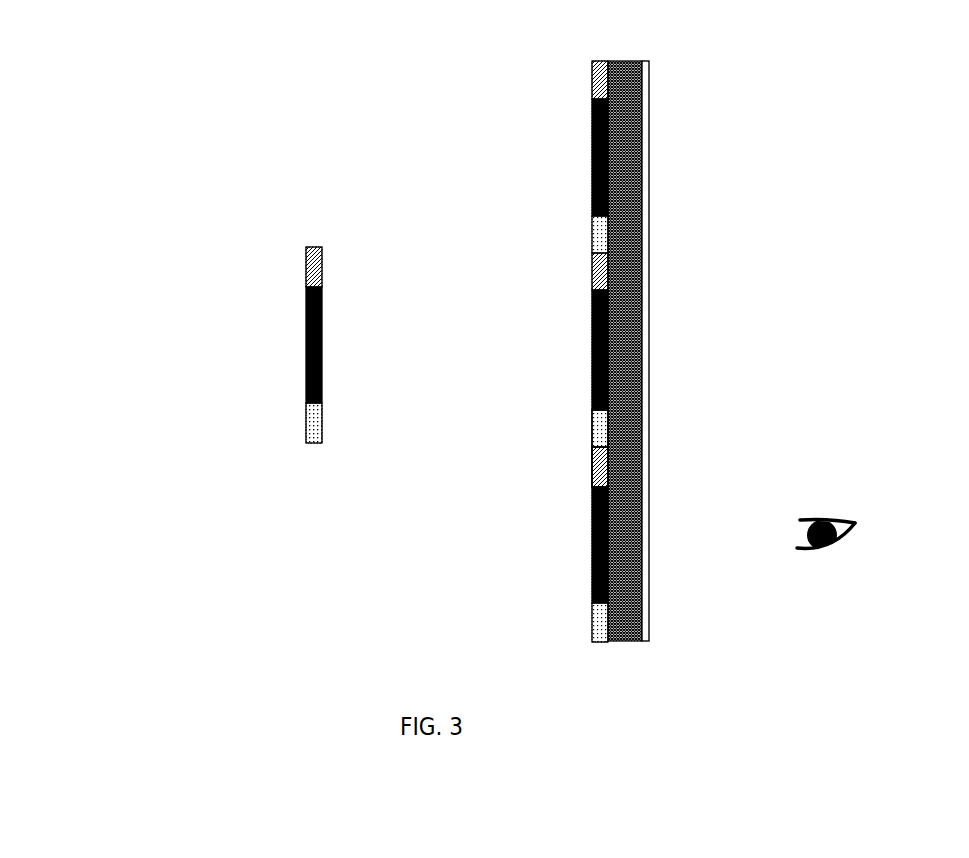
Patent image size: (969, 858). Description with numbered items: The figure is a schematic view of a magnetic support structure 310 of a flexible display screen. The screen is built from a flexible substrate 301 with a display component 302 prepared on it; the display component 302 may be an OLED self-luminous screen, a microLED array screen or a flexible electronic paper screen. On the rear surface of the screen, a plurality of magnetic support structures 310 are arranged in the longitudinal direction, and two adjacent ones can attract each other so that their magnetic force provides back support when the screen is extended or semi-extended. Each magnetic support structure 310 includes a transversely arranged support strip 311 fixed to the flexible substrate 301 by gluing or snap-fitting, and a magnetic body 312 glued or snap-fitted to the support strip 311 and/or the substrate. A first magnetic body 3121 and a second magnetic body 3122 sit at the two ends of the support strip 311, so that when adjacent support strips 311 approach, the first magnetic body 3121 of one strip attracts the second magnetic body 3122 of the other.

The flexible substrate 301 is at (615, 61).
The display component 302 is at (647, 280).
The magnetic support structure 310 is at (182, 320).
The support strip 311 is at (307, 372).
The magnetic body 312 is at (210, 197).
The first magnetic body 3121 is at (307, 268).
The second magnetic body 3122 is at (307, 427).